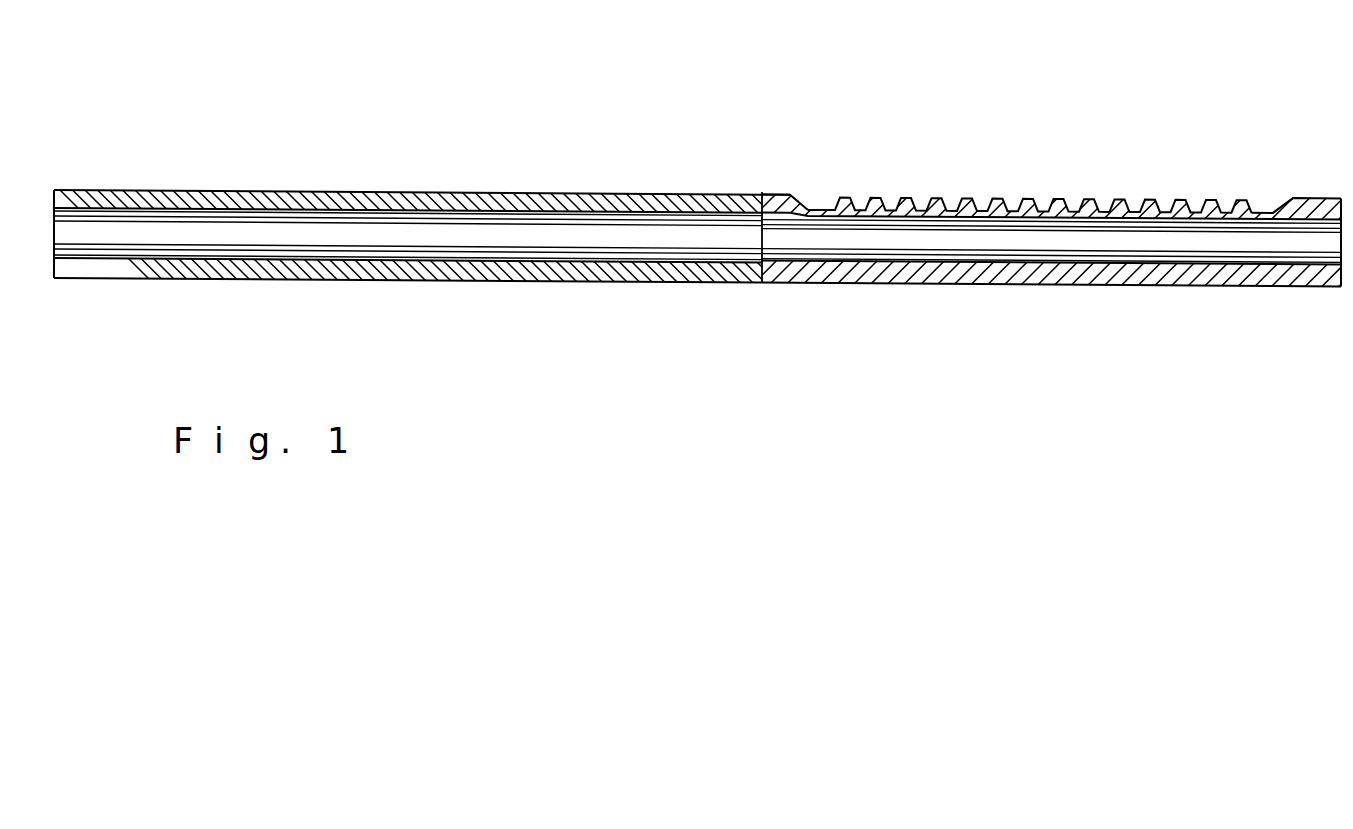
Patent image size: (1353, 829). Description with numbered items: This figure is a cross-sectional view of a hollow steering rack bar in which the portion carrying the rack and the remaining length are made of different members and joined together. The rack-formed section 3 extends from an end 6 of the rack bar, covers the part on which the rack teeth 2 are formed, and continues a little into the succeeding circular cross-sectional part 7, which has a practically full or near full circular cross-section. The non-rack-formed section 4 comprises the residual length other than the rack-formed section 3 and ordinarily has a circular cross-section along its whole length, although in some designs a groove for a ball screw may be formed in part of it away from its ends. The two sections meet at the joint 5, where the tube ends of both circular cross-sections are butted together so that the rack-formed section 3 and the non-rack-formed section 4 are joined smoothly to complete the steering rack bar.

The rack teeth 2 is at (1028, 200).
The rack-formed section 3 is at (1060, 292).
The non-rack-formed section 4 is at (430, 290).
The joint 5 is at (762, 283).
The end of the rack bar 6 is at (1341, 198).
The circular cross-sectional part 7 is at (785, 193).